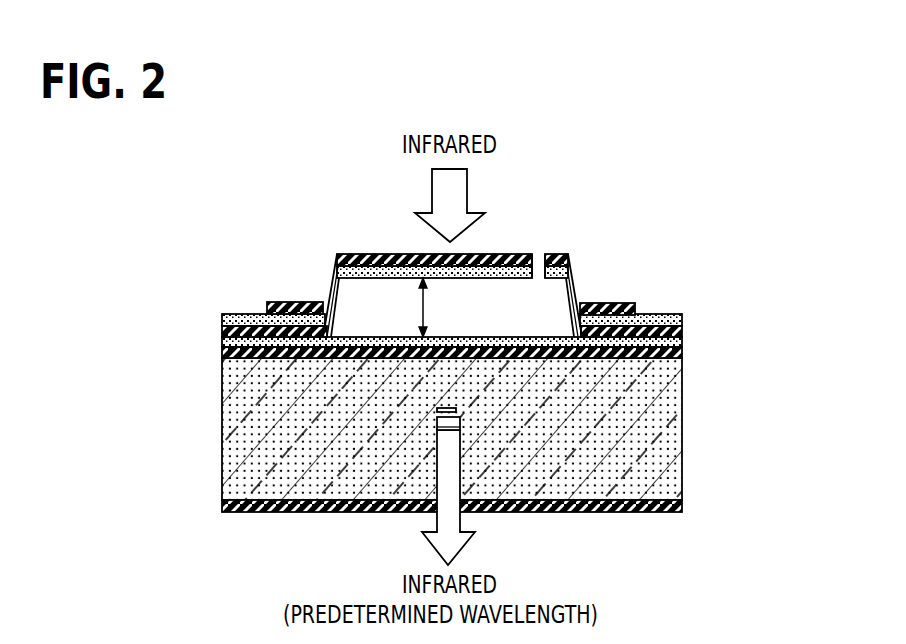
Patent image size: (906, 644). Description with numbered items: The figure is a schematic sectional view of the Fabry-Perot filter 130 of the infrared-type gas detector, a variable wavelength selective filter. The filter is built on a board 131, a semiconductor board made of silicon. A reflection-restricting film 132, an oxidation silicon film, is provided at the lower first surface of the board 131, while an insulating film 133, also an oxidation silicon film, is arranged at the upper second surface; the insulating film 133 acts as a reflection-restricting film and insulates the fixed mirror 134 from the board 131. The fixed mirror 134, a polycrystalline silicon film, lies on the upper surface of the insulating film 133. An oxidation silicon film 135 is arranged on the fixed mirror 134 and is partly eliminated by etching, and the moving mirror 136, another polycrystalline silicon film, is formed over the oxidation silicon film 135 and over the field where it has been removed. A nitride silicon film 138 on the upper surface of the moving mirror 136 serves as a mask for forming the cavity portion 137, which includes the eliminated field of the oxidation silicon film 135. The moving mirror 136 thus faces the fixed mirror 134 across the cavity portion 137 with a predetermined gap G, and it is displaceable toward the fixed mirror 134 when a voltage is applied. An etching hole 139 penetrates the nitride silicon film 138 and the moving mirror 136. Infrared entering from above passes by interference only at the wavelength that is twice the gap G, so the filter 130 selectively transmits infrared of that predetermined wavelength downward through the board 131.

The Fabry-Perot filter 130 is at (497, 360).
The board 131 is at (663, 427).
The reflection-restricting film 132 is at (682, 505).
The insulating film 133 is at (680, 352).
The fixed mirror 134 is at (673, 342).
The oxidation silicon film 135 is at (673, 333).
The moving mirror 136 is at (491, 262).
The cavity portion 137 is at (345, 305).
The nitride silicon film 138 is at (387, 255).
The etching hole 139 is at (536, 262).
The gap G is at (433, 307).